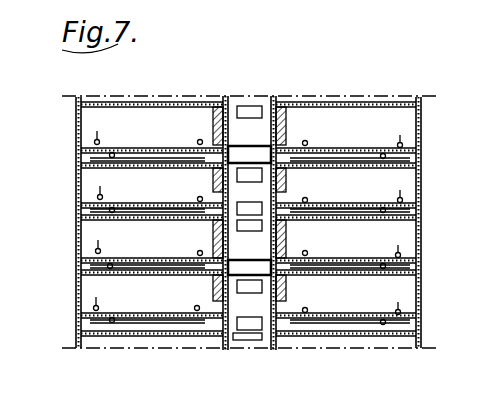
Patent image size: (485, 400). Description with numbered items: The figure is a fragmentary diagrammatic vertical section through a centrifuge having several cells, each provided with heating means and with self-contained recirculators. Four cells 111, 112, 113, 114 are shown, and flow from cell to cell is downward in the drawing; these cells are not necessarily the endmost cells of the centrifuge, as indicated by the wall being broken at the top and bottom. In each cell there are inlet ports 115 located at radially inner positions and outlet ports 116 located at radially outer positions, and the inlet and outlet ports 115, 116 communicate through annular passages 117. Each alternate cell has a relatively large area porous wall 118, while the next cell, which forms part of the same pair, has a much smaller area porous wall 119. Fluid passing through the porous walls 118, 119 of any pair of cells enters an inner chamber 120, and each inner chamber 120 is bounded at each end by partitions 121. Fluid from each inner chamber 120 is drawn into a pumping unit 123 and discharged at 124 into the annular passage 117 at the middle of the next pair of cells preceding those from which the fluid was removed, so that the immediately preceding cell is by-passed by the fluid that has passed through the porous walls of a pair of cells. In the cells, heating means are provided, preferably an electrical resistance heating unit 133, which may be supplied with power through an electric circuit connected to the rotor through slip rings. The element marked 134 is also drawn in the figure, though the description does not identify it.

The cell 111 is at (138, 133).
The cell 112 is at (140, 195).
The cell 113 is at (130, 243).
The cell 114 is at (145, 300).
The inlet port 115 is at (214, 100).
The outlet port 116 is at (104, 141).
The annular passage 117 is at (81, 158).
The porous wall 118 is at (200, 139).
The porous wall 119 is at (199, 197).
The inner chamber 120 is at (249, 203).
The partition 121 is at (260, 365).
The pumping unit 123 is at (249, 249).
The discharge 124 is at (203, 157).
The electrical resistance heating unit 133 is at (317, 309).
The shelf plate 134 is at (143, 170).